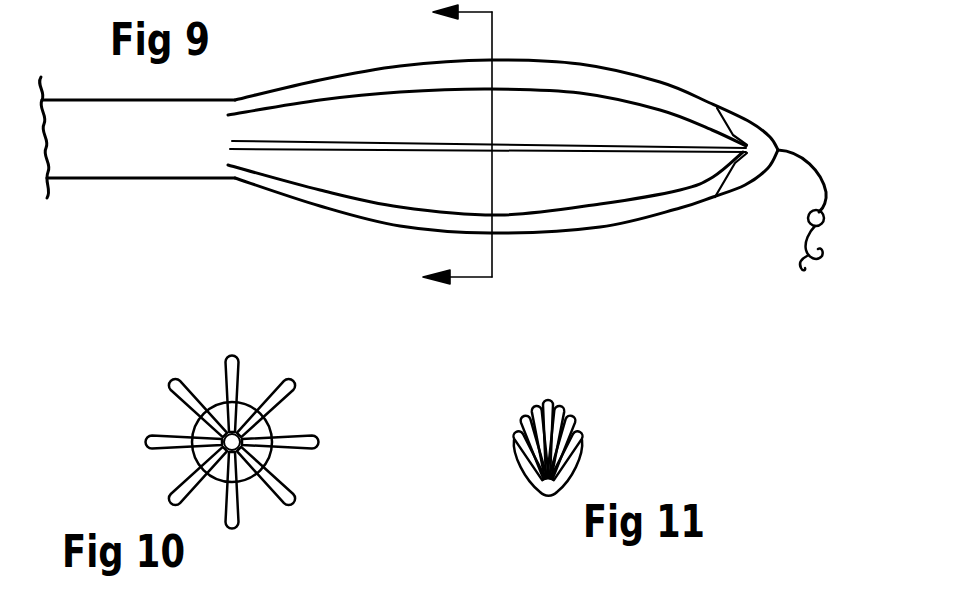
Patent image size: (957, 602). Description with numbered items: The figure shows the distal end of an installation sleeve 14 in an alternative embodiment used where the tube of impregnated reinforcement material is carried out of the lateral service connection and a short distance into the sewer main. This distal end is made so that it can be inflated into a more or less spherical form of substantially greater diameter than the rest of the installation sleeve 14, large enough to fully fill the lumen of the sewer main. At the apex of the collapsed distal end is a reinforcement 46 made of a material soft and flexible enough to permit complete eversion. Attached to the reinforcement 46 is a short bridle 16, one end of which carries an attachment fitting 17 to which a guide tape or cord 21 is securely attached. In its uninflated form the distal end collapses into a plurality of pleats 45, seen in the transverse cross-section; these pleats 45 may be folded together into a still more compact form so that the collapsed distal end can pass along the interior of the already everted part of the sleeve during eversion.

In FIG. 9, the installation sleeve 14 is at (165, 180).
In FIG. 10, the installation sleeve 14 is at (248, 478).
In FIG. 9, the short bridle 16 is at (818, 180).
In FIG. 9, the attachment fitting 17 is at (807, 222).
In FIG. 9, the guide tape or cord 21 is at (817, 248).
In FIG. 9, the pleats 45 is at (437, 150).
In FIG. 10, the pleats 45 is at (225, 353).
In FIG. 11, the pleats 45 is at (553, 407).
In FIG. 9, the reinforcement 46 is at (747, 128).